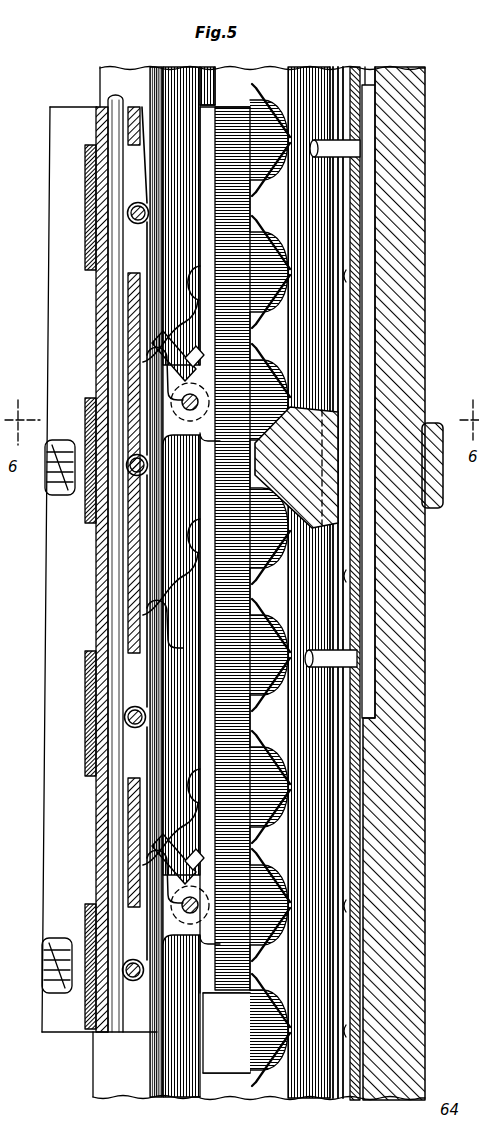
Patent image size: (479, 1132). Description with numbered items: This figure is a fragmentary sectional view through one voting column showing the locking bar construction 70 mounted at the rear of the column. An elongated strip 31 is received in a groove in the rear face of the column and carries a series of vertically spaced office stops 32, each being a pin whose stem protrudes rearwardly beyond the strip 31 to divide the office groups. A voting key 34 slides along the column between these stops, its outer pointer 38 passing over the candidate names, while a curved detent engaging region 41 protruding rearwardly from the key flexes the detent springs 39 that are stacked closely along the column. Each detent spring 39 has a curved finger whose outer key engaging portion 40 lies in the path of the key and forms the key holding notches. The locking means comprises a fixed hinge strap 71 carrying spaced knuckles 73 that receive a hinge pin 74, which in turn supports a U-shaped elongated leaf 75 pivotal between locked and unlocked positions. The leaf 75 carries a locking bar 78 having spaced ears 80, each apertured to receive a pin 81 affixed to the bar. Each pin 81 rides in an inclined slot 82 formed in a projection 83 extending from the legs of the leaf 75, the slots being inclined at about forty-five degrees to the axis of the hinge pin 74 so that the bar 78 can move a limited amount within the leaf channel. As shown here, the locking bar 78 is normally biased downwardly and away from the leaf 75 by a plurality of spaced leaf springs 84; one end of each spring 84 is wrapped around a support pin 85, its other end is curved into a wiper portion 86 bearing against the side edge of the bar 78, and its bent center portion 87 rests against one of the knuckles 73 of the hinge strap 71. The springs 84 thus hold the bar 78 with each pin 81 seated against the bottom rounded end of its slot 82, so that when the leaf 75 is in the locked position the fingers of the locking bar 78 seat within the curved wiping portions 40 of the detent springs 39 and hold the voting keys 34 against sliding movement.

The locking bar construction 70 is at (72, 72).
The hinge strap 71 is at (52, 348).
The knuckles 73 is at (92, 300).
The hinge pin 74 is at (116, 96).
The U-shaped elongated leaf 75 is at (155, 106).
The locking bar 78 is at (225, 110).
The ears 80 is at (200, 434).
The pin 81 is at (202, 390).
The inclined slots 82 is at (186, 361).
The projections 83 is at (182, 339).
The leaf springs 84 is at (180, 318).
The support pin 85 is at (126, 213).
The wiper portion 86 is at (192, 278).
The center portion 87 is at (170, 615).
The detent engaging region 41 is at (248, 473).
The key engaging portion 40 is at (259, 105).
The detent springs 39 is at (220, 1074).
The office stops 32 is at (342, 146).
The elongated strip 31 is at (345, 990).
The voting key 34 is at (350, 444).
The pointer 38 is at (444, 474).